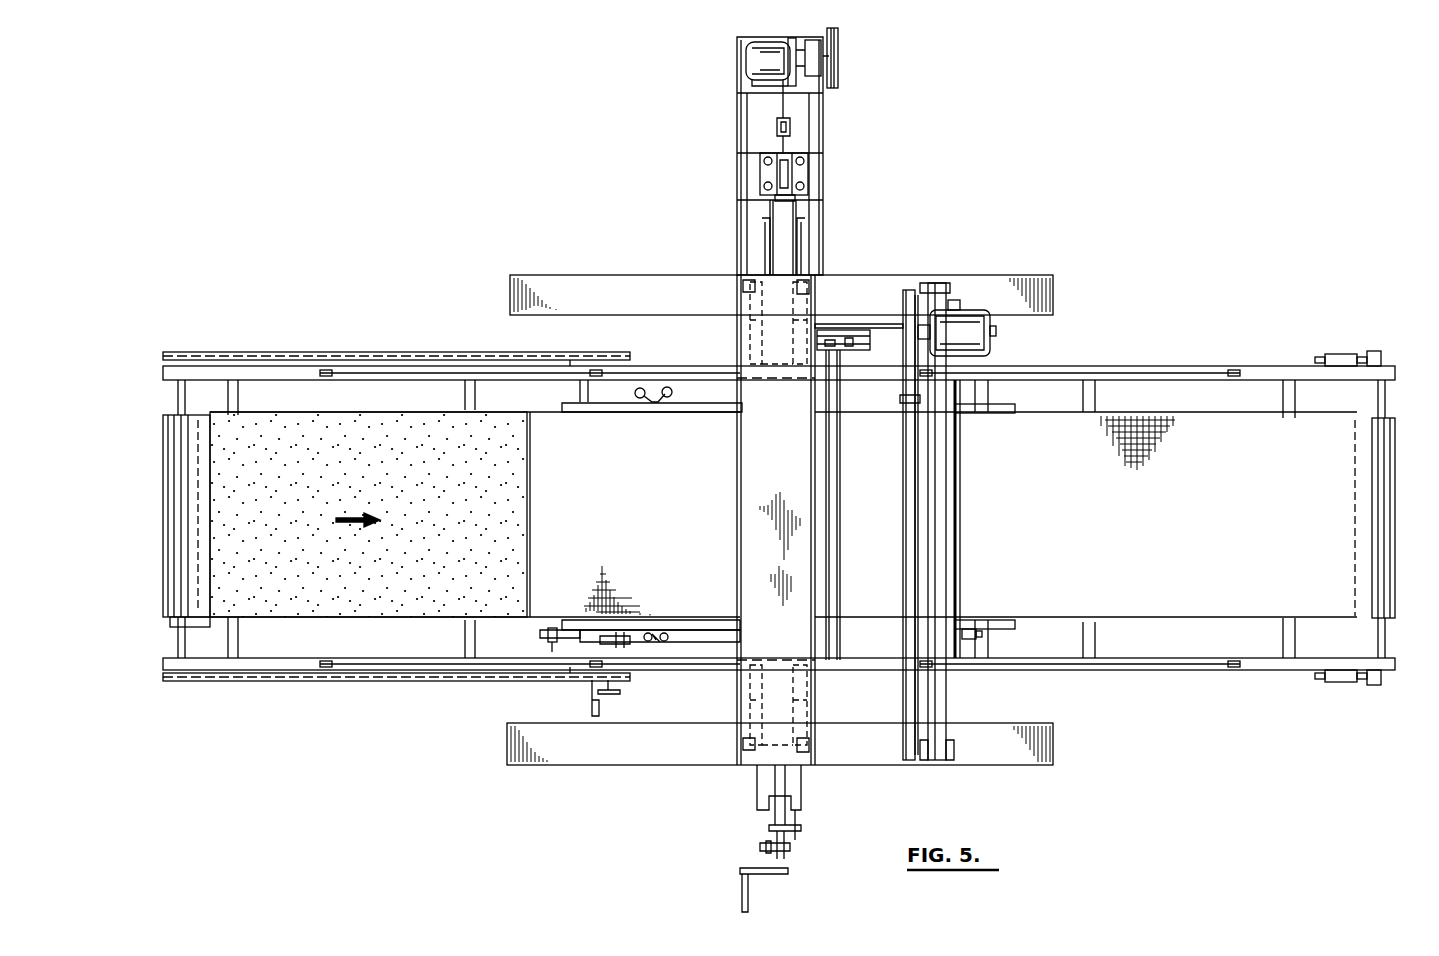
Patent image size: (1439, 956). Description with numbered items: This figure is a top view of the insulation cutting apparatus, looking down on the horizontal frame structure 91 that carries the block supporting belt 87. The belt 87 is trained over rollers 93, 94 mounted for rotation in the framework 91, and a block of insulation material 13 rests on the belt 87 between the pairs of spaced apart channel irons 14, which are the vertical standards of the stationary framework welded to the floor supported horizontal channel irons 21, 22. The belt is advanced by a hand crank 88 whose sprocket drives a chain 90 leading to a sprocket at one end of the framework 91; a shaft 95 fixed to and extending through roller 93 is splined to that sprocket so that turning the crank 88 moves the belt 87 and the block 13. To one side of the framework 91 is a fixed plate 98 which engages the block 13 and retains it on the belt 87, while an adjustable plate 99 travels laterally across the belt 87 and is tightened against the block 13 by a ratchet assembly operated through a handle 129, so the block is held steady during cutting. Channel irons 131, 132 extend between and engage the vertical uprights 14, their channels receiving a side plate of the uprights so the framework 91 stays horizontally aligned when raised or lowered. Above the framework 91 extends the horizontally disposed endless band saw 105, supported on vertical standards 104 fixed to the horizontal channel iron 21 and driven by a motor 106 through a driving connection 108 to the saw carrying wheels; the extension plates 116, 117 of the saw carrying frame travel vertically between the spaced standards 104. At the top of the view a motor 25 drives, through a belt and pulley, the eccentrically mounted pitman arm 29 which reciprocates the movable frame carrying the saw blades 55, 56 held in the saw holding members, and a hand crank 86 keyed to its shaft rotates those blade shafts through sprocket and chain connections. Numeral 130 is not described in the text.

The block of insulation material 13 is at (410, 532).
The channel iron 14 is at (736, 280).
The horizontal channel iron 21 is at (508, 740).
The horizontal channel iron 22 is at (622, 287).
The motor 25 is at (760, 64).
The pitman arm 29 is at (783, 100).
The saw blade 55 is at (840, 572).
The saw blade 56 is at (830, 538).
The hand crank 86 is at (740, 870).
The block supporting belt 87 is at (652, 528).
The hand crank 88 is at (592, 690).
The chain 90 is at (368, 681).
The horizontal frame structure 91 is at (163, 660).
The roller 93 is at (166, 415).
The roller 94 is at (1394, 418).
The shaft 95 is at (170, 640).
The fixed plate 98 is at (990, 412).
The adjustable plate 99 is at (990, 624).
The vertical standard 104 is at (905, 290).
The saw 105 is at (903, 536).
The motor 106 is at (990, 340).
The driving connection 108 is at (897, 333).
The extension plate 116 is at (932, 290).
The extension plate 117 is at (928, 765).
The handle 129 is at (546, 636).
The clamp assembly 130 is at (700, 632).
The channel iron 131 is at (744, 346).
The channel iron 132 is at (796, 374).